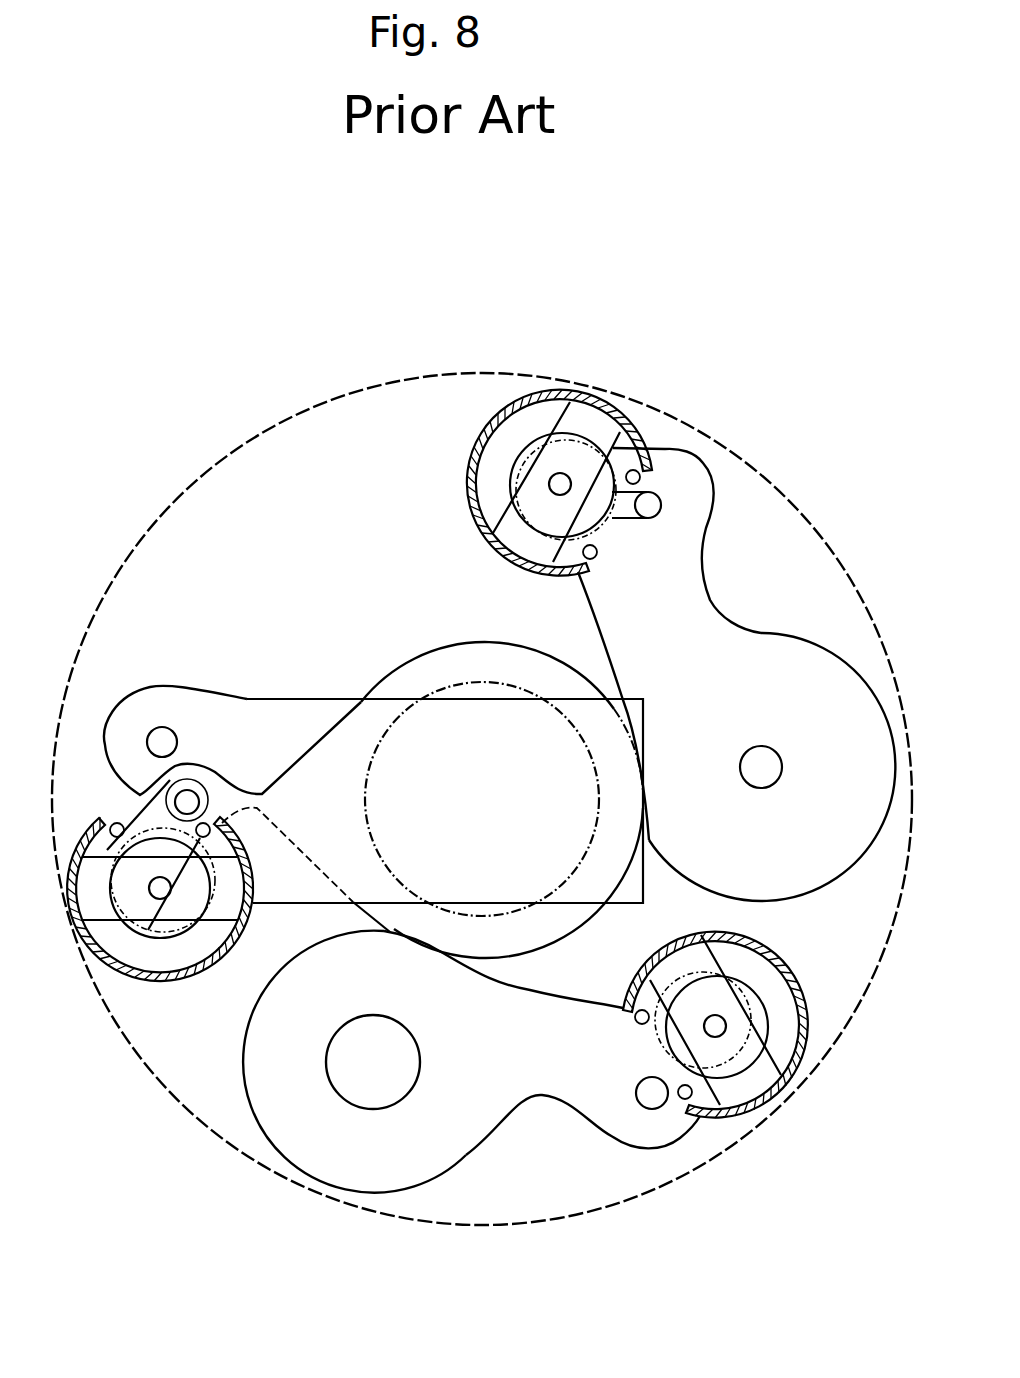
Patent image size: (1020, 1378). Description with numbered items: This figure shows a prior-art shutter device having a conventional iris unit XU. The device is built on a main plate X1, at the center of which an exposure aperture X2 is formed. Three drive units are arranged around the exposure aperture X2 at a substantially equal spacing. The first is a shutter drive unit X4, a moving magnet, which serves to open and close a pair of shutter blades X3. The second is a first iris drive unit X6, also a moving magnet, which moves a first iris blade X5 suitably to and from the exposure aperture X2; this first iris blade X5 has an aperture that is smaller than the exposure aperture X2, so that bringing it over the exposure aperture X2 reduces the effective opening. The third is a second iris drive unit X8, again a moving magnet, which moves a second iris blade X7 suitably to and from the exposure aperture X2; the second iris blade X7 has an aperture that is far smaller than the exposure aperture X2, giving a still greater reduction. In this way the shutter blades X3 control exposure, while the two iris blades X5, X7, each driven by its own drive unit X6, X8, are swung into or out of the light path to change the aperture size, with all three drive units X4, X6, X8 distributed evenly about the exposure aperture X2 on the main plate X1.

The iris unit XU is at (800, 360).
The main plate X1 is at (398, 374).
The exposure aperture X2 is at (380, 740).
The shutter blades X3 is at (283, 733).
The shutter drive unit X4 is at (119, 993).
The first iris blade X5 is at (437, 1137).
The first iris drive unit X6 is at (756, 1128).
The second iris blade X7 is at (750, 643).
The second iris drive unit X8 is at (456, 541).